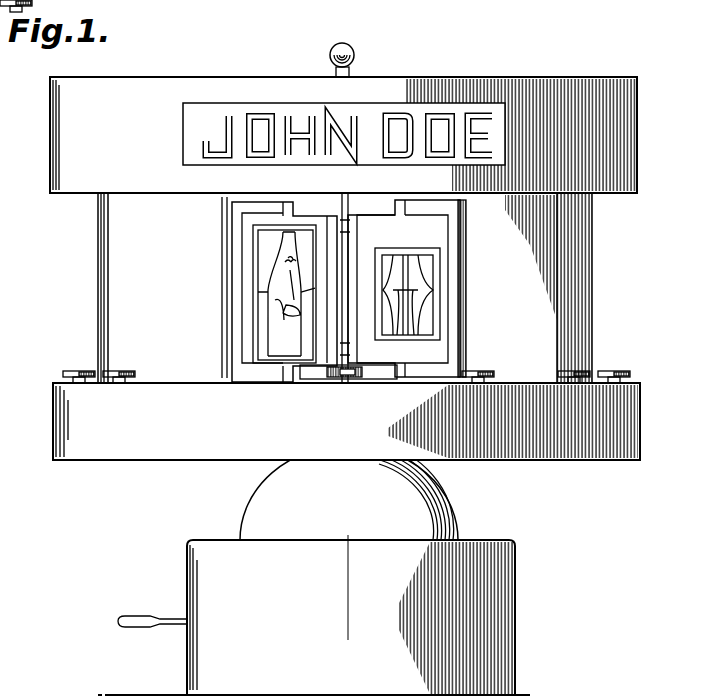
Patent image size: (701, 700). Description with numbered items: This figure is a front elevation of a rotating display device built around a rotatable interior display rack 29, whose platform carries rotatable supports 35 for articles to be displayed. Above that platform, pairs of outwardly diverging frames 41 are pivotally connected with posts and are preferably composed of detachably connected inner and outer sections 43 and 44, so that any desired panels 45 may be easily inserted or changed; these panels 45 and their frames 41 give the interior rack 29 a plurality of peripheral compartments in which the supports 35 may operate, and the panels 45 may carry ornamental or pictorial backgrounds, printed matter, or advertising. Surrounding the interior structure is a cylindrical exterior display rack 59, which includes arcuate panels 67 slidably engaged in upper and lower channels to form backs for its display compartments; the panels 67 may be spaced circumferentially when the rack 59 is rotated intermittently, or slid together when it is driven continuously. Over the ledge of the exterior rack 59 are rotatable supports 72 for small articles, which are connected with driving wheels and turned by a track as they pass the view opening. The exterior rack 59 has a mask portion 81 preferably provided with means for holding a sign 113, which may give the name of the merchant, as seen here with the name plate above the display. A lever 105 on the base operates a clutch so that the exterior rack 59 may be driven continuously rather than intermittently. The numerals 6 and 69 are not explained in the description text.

The knob 6 is at (342, 39).
The sign 113 is at (373, 113).
The mask portion 81 is at (625, 152).
The inner sections 43 is at (360, 204).
The exterior display rack 59 is at (98, 278).
The arcuate panels 67 is at (582, 315).
The outer sections 44 is at (238, 274).
The panels 45 is at (260, 299).
The outwardly diverging frames 41 is at (243, 327).
The rotatable supports 72 is at (115, 371).
The rotatable supports 35 is at (315, 379).
The bottom plate 69 is at (640, 410).
The rotatable interior display rack 29 is at (200, 598).
The lever 105 is at (165, 622).